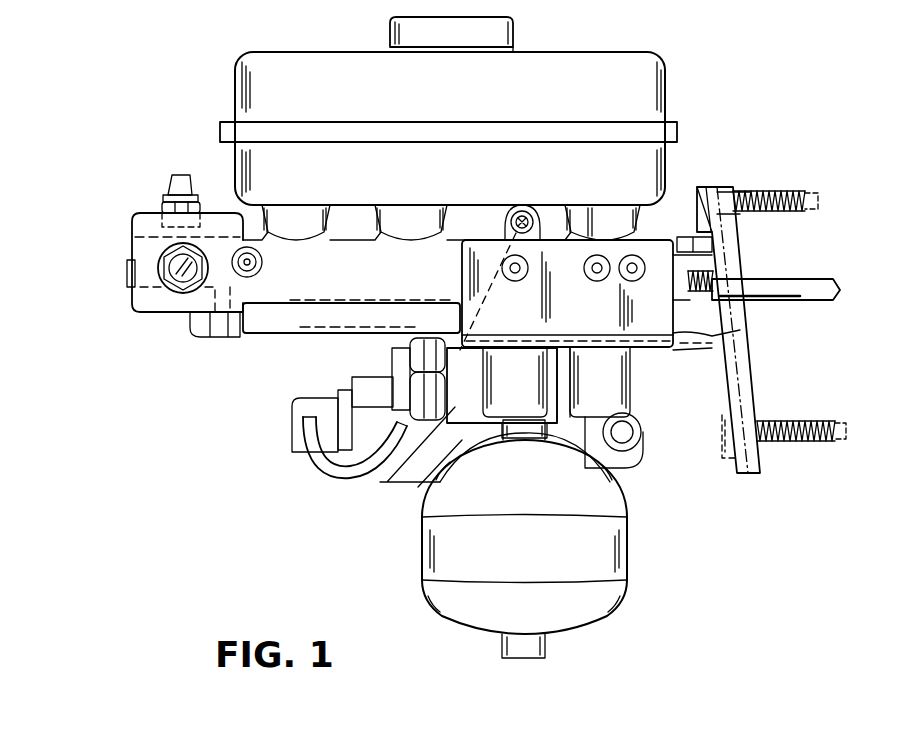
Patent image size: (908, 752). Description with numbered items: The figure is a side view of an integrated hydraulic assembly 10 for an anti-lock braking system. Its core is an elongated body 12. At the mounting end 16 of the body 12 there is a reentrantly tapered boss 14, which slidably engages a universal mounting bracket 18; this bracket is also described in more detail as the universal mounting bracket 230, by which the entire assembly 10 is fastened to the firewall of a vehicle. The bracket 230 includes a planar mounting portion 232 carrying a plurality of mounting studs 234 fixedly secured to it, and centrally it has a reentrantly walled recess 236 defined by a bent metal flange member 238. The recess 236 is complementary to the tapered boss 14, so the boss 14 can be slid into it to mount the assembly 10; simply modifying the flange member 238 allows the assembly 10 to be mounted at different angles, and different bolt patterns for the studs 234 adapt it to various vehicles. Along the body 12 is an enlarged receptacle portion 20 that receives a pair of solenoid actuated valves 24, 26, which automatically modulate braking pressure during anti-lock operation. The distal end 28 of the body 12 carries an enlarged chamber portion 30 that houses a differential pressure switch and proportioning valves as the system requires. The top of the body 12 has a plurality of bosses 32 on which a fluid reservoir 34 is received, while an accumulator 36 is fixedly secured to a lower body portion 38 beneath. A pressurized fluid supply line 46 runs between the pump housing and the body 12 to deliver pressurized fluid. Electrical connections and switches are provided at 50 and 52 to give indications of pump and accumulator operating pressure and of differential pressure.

The integrated hydraulic assembly 10 is at (186, 423).
The elongated body 12 is at (278, 320).
The reentrantly tapered boss 14 is at (690, 238).
The mounting end 16 is at (655, 318).
The universal mounting bracket 18 is at (736, 274).
The enlarged receptacle portion 20 is at (577, 282).
The solenoid actuated valve 24 is at (430, 480).
The solenoid actuated valve 26 is at (612, 404).
The distal end 28 is at (185, 298).
The enlarged chamber portion 30 is at (140, 306).
The bosses 32 is at (298, 236).
The fluid reservoir 34 is at (648, 78).
The accumulator 36 is at (605, 566).
The lower body portion 38 is at (392, 480).
The pressurized fluid supply line 46 is at (318, 462).
The electrical connection and switch 50 is at (363, 388).
The electrical connection and switch 52 is at (173, 184).
The universal mounting bracket 230 is at (735, 186).
The planar mounting portion 232 is at (734, 222).
The mounting studs 234 is at (797, 190).
The reentrantly walled recess 236 is at (724, 334).
The bent metal flange member 238 is at (727, 383).